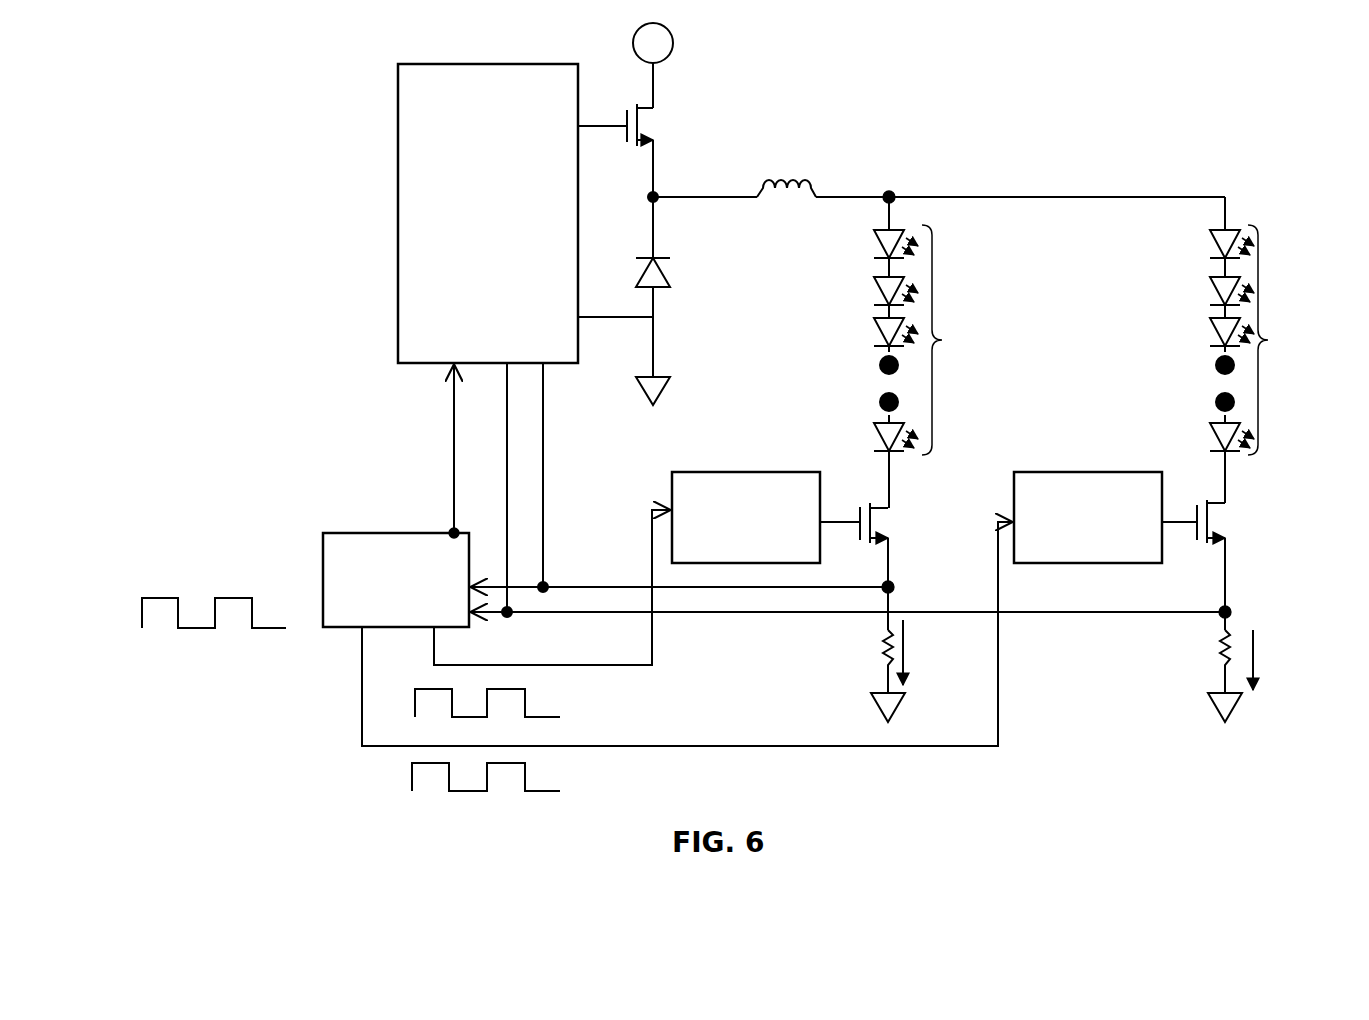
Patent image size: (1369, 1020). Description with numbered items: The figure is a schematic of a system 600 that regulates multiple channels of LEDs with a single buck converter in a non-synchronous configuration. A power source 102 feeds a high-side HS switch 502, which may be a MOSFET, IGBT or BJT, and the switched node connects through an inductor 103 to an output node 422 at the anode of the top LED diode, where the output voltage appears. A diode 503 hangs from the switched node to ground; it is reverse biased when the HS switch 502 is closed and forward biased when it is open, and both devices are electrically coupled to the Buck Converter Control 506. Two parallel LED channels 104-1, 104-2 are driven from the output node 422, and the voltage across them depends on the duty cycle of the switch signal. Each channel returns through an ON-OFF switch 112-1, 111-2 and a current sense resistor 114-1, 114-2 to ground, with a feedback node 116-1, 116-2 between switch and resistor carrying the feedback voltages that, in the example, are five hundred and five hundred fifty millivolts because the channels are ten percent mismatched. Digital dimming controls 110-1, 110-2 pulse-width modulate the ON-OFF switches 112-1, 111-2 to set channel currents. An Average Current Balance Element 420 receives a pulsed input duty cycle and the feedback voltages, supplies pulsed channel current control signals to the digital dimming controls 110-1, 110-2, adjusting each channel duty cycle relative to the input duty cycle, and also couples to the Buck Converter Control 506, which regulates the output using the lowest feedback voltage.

The system 600 is at (744, 397).
The power source 102 is at (672, 48).
The HS switch 502 is at (660, 110).
The inductor 103 is at (772, 190).
The node 422 is at (893, 194).
The diode 503 is at (668, 272).
The Buck Converter Control 506 is at (488, 213).
The LED channel 104-1 is at (942, 340).
The LED channel 104-2 is at (1268, 340).
The digital dimming control 110-1 is at (720, 471).
The digital dimming control 110-2 is at (1062, 471).
The ON-OFF switch 112-1 is at (895, 513).
The ON-OFF switch 111-2 is at (1232, 511).
The feedback node 116-1 is at (893, 584).
The feedback node 116-2 is at (1230, 609).
The current sense resistor 114-1 is at (880, 655).
The current sense resistor 114-2 is at (1213, 661).
The Average Current Balance Element 420 is at (395, 533).